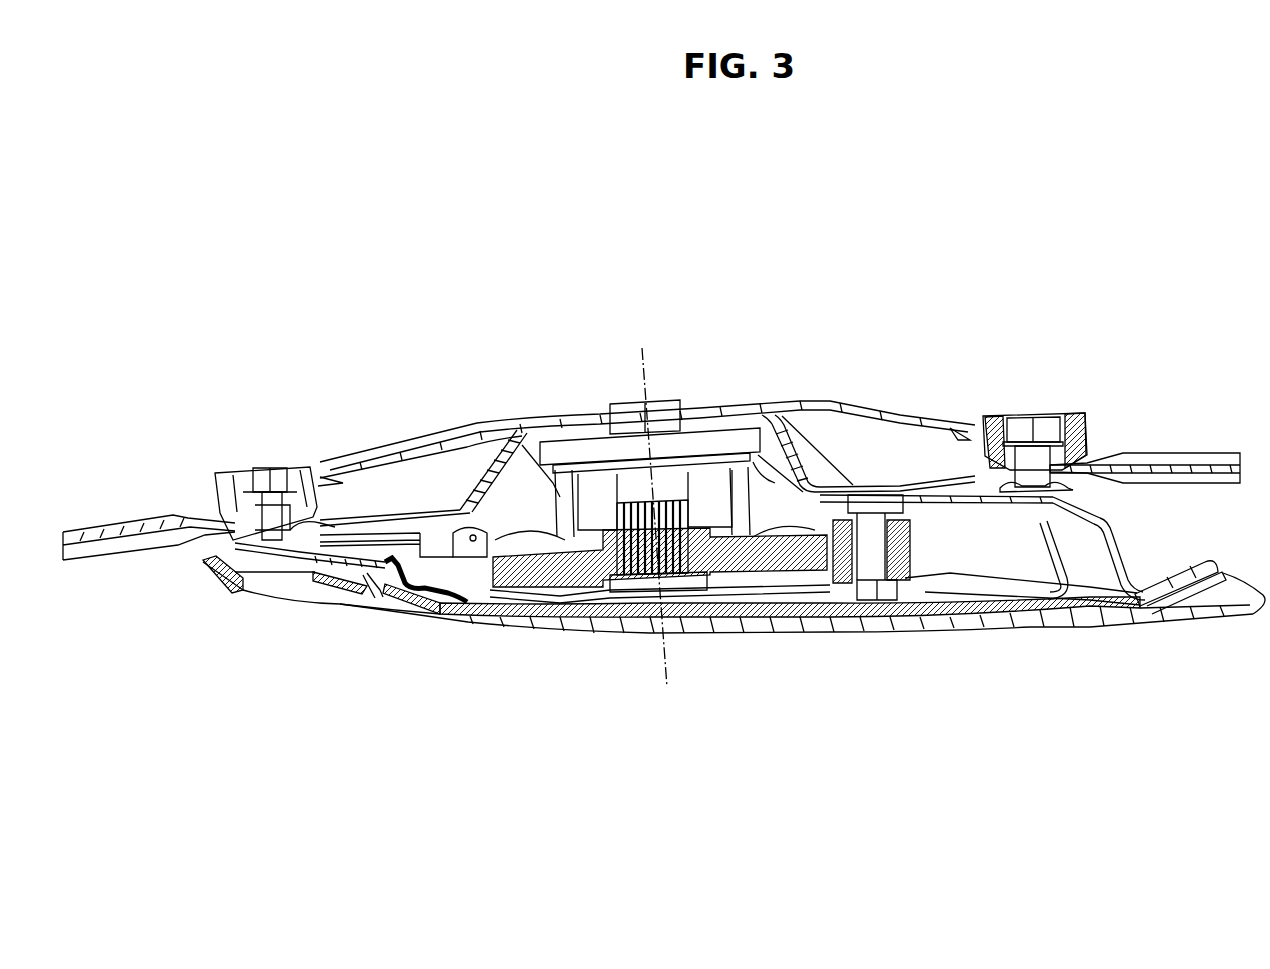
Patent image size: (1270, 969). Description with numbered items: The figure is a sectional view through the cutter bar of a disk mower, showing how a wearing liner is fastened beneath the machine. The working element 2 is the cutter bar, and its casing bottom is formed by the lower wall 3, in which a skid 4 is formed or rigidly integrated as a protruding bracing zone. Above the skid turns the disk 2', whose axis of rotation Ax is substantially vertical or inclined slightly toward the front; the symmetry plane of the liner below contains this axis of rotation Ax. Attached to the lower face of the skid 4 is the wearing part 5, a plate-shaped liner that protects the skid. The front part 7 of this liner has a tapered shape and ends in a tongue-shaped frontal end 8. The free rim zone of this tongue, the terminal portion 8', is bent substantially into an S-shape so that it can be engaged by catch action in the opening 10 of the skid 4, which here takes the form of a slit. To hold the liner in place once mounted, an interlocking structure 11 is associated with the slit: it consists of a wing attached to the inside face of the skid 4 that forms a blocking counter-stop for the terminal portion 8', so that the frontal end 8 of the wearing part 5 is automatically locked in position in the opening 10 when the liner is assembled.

The working element 2 is at (651, 384).
The disk 2' is at (647, 397).
The axis of rotation Ax is at (645, 372).
The lower wall 3 is at (621, 603).
The skid 4 is at (823, 613).
The wearing part 5 is at (878, 628).
The front part 7 is at (419, 630).
The frontal end 8 is at (376, 633).
The terminal portion 8' is at (298, 636).
The opening 10 is at (369, 594).
The interlocking structure 11 is at (383, 562).